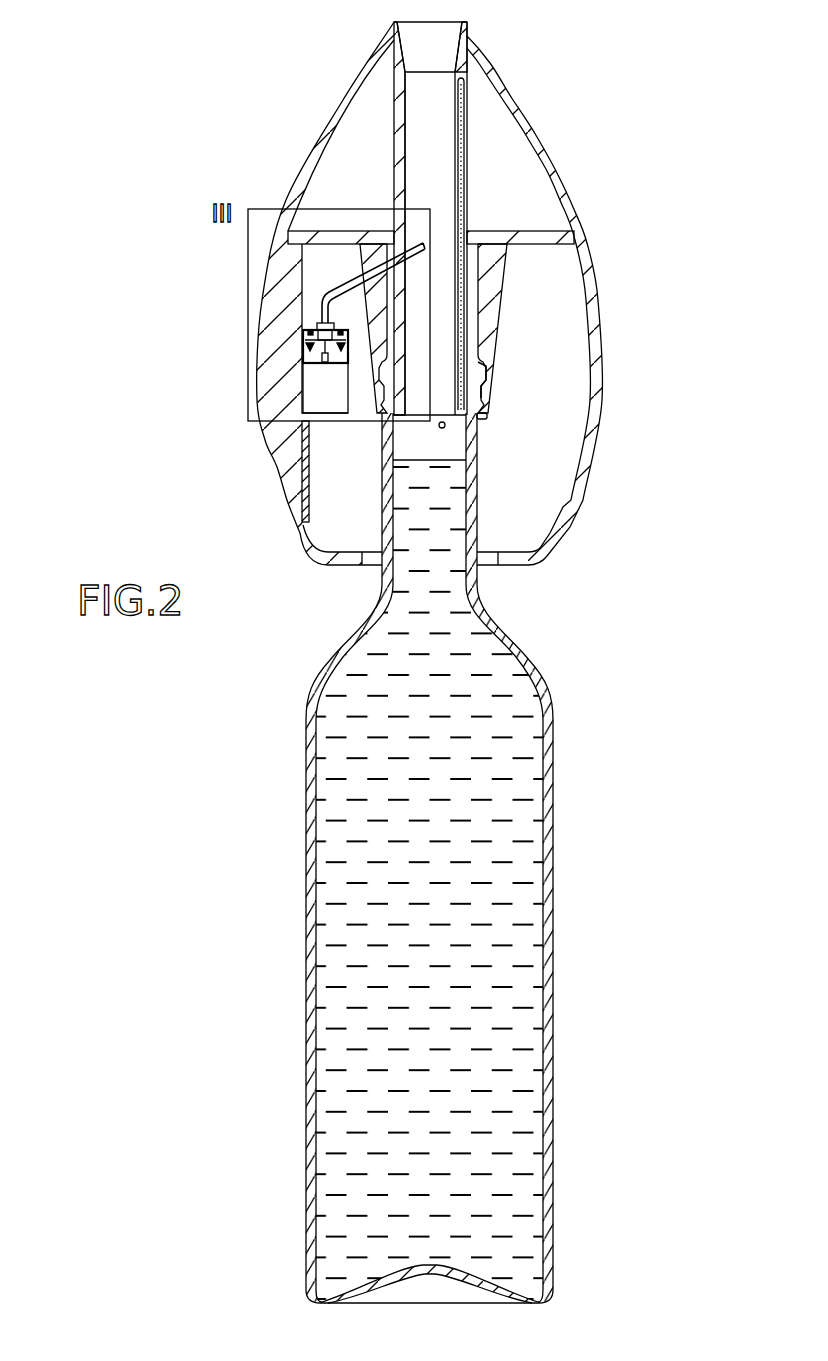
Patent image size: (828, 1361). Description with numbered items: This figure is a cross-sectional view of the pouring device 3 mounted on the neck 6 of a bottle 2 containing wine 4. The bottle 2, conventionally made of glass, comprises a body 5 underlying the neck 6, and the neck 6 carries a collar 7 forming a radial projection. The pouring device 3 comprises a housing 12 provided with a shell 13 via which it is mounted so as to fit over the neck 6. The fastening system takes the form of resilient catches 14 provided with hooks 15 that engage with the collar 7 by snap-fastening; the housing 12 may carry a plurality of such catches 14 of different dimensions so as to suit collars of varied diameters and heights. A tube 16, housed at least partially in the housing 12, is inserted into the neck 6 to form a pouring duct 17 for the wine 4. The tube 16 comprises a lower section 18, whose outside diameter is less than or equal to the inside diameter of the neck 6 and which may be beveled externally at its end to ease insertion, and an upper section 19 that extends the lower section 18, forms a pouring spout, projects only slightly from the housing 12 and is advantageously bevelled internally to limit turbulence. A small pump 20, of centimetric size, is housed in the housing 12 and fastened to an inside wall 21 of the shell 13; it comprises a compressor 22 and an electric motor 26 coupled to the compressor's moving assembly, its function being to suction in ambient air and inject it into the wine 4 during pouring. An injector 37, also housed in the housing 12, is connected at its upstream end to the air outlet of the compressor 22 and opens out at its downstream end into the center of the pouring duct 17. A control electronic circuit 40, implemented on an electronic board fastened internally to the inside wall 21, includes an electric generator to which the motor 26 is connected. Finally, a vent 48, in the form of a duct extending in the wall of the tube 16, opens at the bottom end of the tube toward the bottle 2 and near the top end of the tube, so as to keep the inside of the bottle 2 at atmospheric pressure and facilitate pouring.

The bottle 2 is at (553, 792).
The pouring device 3 is at (602, 333).
The wine 4 is at (530, 916).
The body 5 is at (548, 1006).
The neck 6 is at (470, 507).
The collar 7 is at (478, 390).
The housing 12 is at (592, 257).
The shell 13 is at (598, 360).
The resilient catches 14 is at (492, 300).
The hooks 15 is at (486, 417).
The tube 16 is at (394, 95).
The pouring duct 17 is at (417, 190).
The lower section 18 is at (399, 394).
The upper section 19 is at (396, 30).
The pump 20 is at (302, 356).
The inside wall 21 is at (302, 273).
The compressor 22 is at (303, 340).
The electric motor 26 is at (312, 401).
The injector 37 is at (374, 268).
The control electronic circuit 40 is at (307, 490).
The vent 48 is at (461, 190).